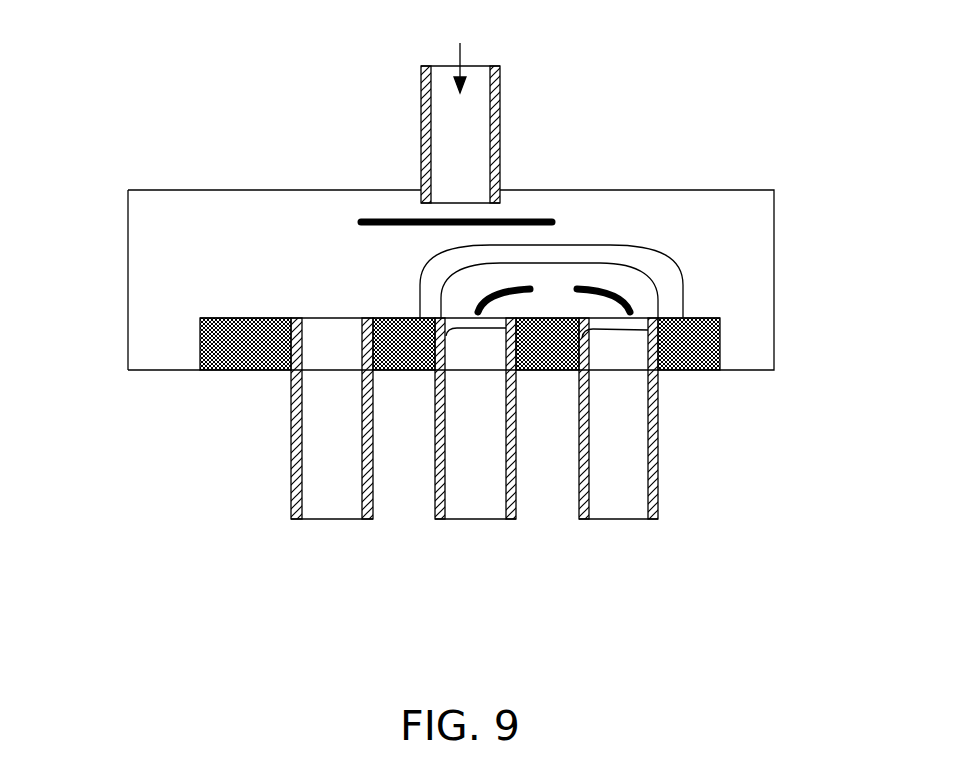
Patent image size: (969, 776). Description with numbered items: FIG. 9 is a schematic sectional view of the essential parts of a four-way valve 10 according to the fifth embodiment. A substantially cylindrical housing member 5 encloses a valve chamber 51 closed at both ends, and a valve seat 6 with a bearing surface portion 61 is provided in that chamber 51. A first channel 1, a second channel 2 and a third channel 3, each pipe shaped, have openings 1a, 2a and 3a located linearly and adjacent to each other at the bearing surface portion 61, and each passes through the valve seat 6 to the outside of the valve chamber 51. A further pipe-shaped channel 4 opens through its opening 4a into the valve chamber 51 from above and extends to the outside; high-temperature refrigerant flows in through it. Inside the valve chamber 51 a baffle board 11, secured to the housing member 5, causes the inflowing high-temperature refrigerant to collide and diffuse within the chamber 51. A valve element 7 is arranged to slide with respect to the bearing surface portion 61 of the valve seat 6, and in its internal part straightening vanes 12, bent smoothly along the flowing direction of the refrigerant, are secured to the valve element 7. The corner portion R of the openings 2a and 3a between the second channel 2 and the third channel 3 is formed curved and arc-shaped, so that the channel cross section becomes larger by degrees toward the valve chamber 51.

The four-way valve 10 is at (85, 104).
The first channel 1 is at (318, 493).
The second channel 2 is at (462, 500).
The third channel 3 is at (628, 497).
The opening of first channel 1a is at (318, 318).
The opening of second channel 2a is at (482, 318).
The opening of third channel 3a is at (636, 317).
The pipe-shaped channel 4 is at (500, 84).
The opening of pipe-shaped channel 4a is at (480, 198).
The housing member 5 is at (774, 222).
The valve chamber 51 is at (148, 222).
The valve seat 6 is at (700, 343).
The bearing surface portion 61 is at (220, 318).
The valve element 7 is at (678, 304).
The baffle board 11 is at (393, 219).
The straightening vanes 12 is at (526, 286).
The corner portion R is at (437, 323).